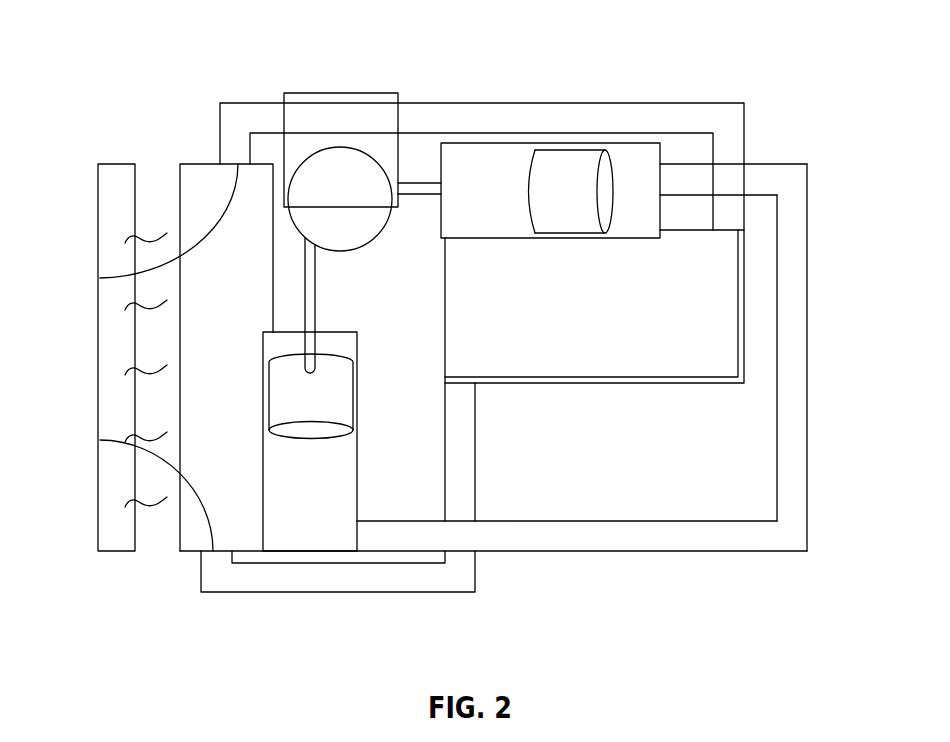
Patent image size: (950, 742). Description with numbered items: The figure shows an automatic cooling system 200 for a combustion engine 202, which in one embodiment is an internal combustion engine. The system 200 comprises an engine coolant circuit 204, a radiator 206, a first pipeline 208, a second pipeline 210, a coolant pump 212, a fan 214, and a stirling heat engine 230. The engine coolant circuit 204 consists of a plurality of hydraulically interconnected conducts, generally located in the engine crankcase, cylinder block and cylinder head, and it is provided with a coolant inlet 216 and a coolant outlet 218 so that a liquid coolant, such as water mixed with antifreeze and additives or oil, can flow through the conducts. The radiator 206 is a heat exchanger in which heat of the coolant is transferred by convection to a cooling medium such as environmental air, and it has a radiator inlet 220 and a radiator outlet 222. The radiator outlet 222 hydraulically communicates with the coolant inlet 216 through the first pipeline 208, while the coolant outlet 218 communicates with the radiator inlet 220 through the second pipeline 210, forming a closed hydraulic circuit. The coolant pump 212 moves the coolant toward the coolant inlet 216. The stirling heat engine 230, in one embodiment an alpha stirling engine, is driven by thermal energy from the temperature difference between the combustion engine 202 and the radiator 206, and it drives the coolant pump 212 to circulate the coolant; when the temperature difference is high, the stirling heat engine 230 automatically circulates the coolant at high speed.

The automatic cooling system 200 is at (121, 62).
The combustion engine 202 is at (625, 378).
The engine coolant circuit 204 is at (683, 389).
The radiator 206 is at (180, 355).
The first pipeline 208 is at (248, 593).
The second pipeline 210 is at (518, 103).
The coolant pump 212 is at (330, 93).
The fan 214 is at (98, 392).
The coolant inlet 216 is at (457, 385).
The coolant outlet 218 is at (744, 213).
The radiator inlet 220 is at (100, 278).
The radiator outlet 222 is at (100, 438).
The stirling heat engine 230 is at (586, 553).